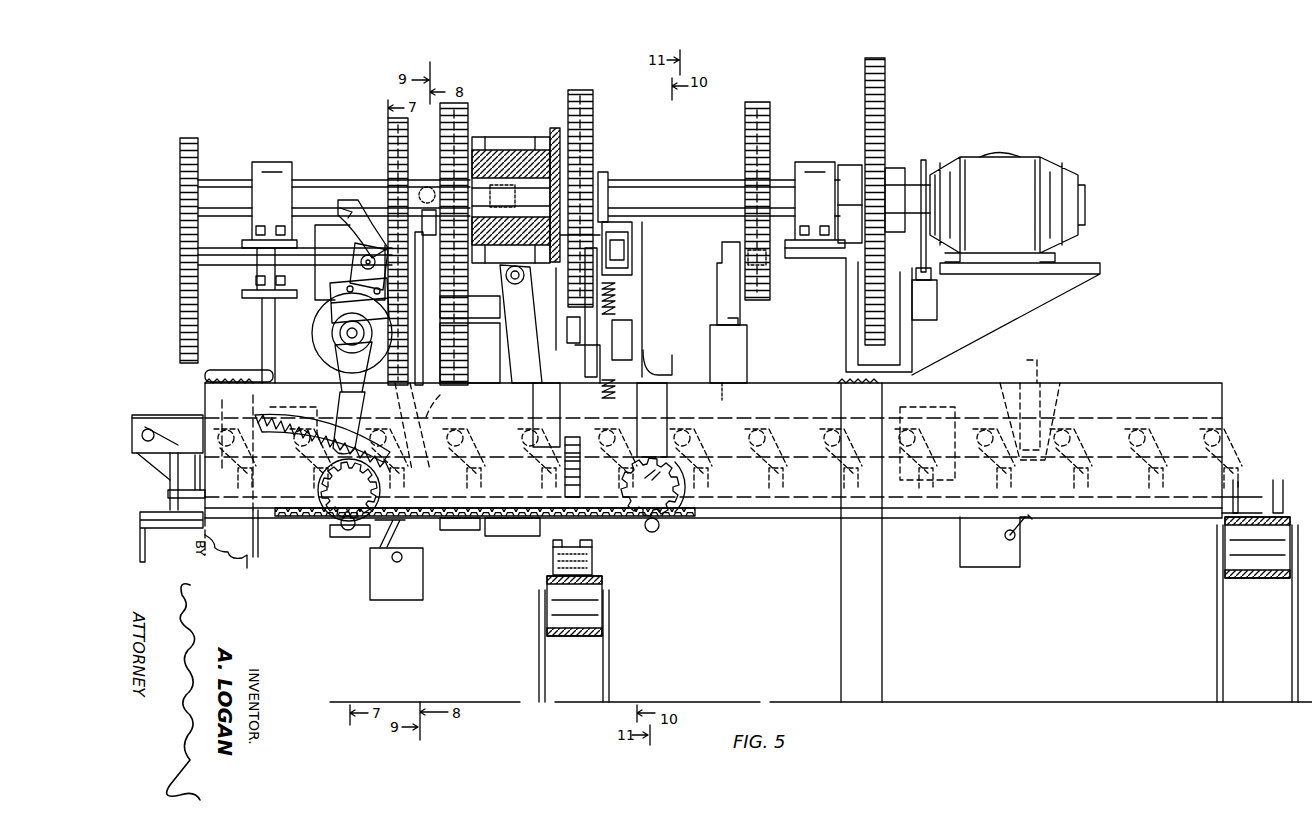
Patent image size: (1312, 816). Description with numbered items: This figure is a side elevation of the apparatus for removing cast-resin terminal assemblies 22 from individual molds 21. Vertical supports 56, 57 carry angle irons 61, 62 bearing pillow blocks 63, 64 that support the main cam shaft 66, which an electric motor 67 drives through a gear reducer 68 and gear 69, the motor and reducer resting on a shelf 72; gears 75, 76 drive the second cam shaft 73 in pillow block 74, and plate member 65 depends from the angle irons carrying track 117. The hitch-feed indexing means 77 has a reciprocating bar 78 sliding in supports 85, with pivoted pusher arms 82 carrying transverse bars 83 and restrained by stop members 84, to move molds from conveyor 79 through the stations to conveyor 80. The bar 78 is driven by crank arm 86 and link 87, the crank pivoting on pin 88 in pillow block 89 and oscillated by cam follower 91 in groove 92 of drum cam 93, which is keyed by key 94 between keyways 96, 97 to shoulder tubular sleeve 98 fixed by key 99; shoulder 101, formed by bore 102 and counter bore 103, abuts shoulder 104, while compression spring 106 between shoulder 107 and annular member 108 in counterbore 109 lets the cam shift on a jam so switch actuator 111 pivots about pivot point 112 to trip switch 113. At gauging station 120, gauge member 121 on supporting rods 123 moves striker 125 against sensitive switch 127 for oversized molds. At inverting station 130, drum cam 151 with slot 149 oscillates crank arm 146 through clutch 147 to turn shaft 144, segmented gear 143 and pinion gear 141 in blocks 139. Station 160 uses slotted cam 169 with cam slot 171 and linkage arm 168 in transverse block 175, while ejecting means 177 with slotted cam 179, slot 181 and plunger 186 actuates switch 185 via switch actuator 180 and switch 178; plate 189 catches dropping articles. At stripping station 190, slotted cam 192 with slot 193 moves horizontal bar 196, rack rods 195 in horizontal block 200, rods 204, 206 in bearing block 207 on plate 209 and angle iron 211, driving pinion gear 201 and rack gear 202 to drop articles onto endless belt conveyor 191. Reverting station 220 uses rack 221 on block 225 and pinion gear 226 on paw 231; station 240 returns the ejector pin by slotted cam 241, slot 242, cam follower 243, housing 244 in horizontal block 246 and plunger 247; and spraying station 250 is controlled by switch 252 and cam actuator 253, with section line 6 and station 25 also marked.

The section line 6 is at (258, 530).
The mold 21 is at (1278, 482).
The terminal assembly 22 is at (553, 570).
The hopper 25 is at (1024, 488).
The vertical support 56 is at (882, 588).
The vertical support 57 is at (234, 557).
The angle iron 61 is at (846, 288).
The angle iron 62 is at (262, 333).
The pillow block 63 is at (820, 162).
The pillow block 64 is at (272, 162).
The plate member 65 is at (810, 383).
The main cam shaft 66 is at (332, 182).
The electric motor 67 is at (1015, 152).
The gear reducer 68 is at (1062, 172).
The gear 69 is at (885, 88).
The shelf 72 is at (1090, 275).
The second cam shaft 73 is at (220, 268).
The pillow block 74 is at (280, 275).
The gear 75 is at (190, 312).
The gear 76 is at (198, 150).
The mold indexing means 77 is at (215, 395).
The reciprocating bar 78 is at (172, 415).
The conveyor 79 is at (183, 535).
The conveyor 80 is at (1216, 537).
The pusher arm 82 is at (1222, 440).
The transversely extending bar 83 is at (1150, 480).
The stop member 84 is at (1122, 463).
The support 85 is at (920, 407).
The crank arm 86 is at (515, 360).
The link 87 is at (738, 414).
The pin 88 is at (506, 280).
The pillow block 89 is at (485, 333).
The cam follower 91 is at (509, 200).
The peripheral groove 92 is at (530, 150).
The drum cam 93 is at (556, 128).
The key 94 is at (552, 305).
The internal keyway 96 is at (556, 282).
The external keyway 97 is at (531, 213).
The shoulder tubular sleeve 98 is at (557, 130).
The key 99 is at (572, 168).
The shoulder 101 is at (580, 150).
The bore 102 is at (578, 172).
The counter bore 103 is at (588, 130).
The shoulder 104 is at (523, 150).
The compression spring 106 is at (512, 150).
The shoulder 107 is at (518, 193).
The annular member 108 is at (482, 274).
The counterbore 109 is at (490, 150).
The switch actuator 111 is at (581, 231).
The pivot point 112 is at (556, 318).
The switch 113 is at (567, 330).
The track 117 is at (1245, 460).
The mold gauging station 120 is at (291, 574).
The gauge member 121 is at (322, 443).
The supporting rod 123 is at (295, 482).
The striker 125 is at (269, 535).
The sensitive switch 127 is at (308, 527).
The mold inverting station 130 is at (342, 574).
The block 139 is at (392, 362).
The pinion gear 141 is at (371, 549).
The segmented gear 143 is at (335, 366).
The shaft 144 is at (342, 340).
The oscillating crank arm 146 is at (355, 264).
The clutch 147 is at (318, 337).
The slot 149 is at (363, 223).
The drum cam 151 is at (315, 222).
The station 160 is at (444, 575).
The curved linkage arm 168 is at (405, 405).
The slotted cam 169 is at (392, 142).
The cam slot 171 is at (408, 150).
The transverse block 175 is at (445, 351).
The article ejecting means 177 is at (431, 193).
The switch 178 is at (393, 590).
The slotted cam 179 is at (465, 105).
The switch actuator 180 is at (428, 225).
The slot 181 is at (470, 124).
The switch 185 is at (440, 302).
The plunger 186 is at (451, 398).
The plate 189 is at (485, 534).
The article stripping station 190 is at (517, 578).
The endless belt conveyor 191 is at (617, 604).
The slotted cam 192 is at (593, 104).
The slot 193 is at (598, 90).
The rack rod 195 is at (561, 414).
The horizontal bar 196 is at (622, 243).
The horizontal block 200 is at (590, 365).
The pinion gear 201 is at (572, 497).
The rack gear 202 is at (575, 505).
The rod 204 is at (622, 300).
The rod 206 is at (625, 172).
The bearing block 207 is at (632, 338).
The plate 209 is at (643, 272).
The angle iron 211 is at (664, 361).
The mold reverting station 220 is at (702, 558).
The rack 221 is at (525, 535).
The block 225 is at (667, 394).
The pinion gear 226 is at (652, 458).
The paw 231 is at (683, 510).
The station 240 is at (788, 572).
The slotted cam 241 is at (765, 140).
The slot 242 is at (772, 118).
The cam follower 243 is at (770, 258).
The housing 244 is at (740, 308).
The horizontal block 246 is at (747, 340).
The plunger 247 is at (733, 395).
The spraying station 250 is at (1055, 566).
The switch 252 is at (937, 298).
The cam actuator 253 is at (923, 165).